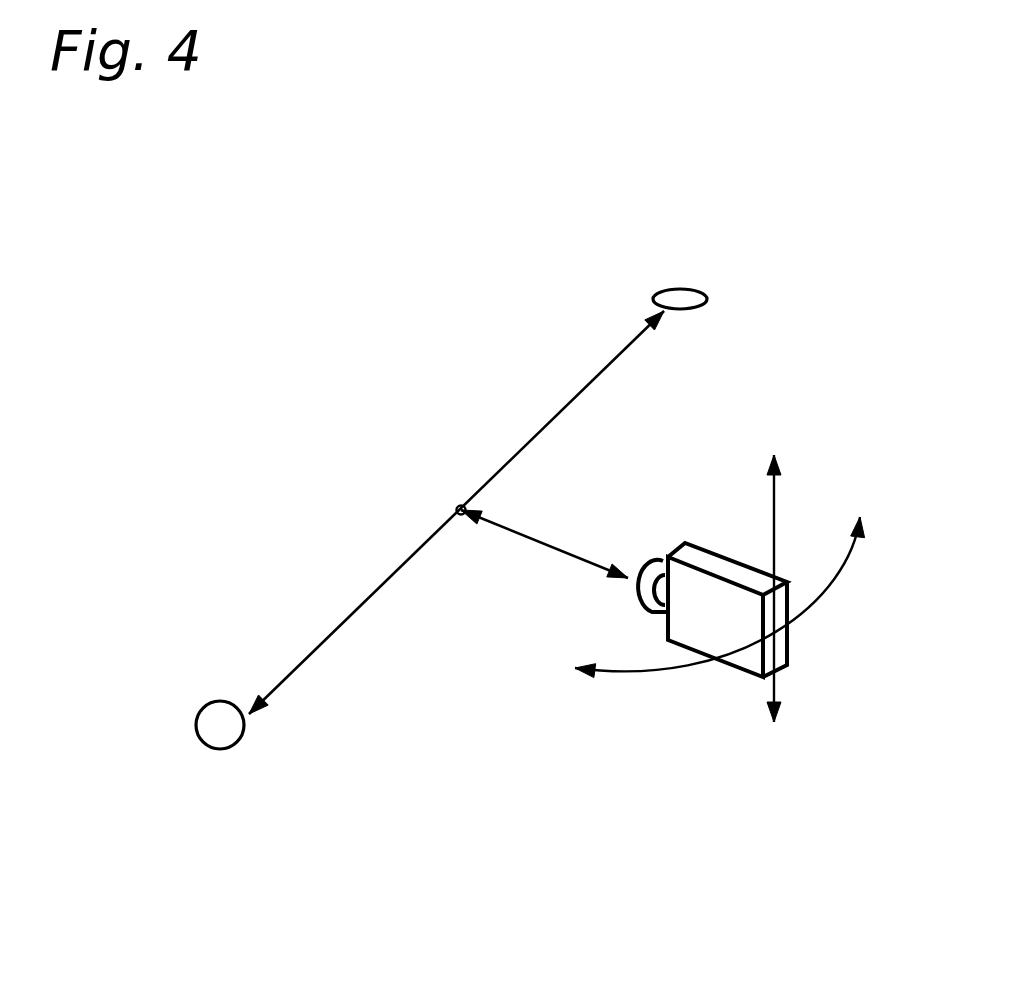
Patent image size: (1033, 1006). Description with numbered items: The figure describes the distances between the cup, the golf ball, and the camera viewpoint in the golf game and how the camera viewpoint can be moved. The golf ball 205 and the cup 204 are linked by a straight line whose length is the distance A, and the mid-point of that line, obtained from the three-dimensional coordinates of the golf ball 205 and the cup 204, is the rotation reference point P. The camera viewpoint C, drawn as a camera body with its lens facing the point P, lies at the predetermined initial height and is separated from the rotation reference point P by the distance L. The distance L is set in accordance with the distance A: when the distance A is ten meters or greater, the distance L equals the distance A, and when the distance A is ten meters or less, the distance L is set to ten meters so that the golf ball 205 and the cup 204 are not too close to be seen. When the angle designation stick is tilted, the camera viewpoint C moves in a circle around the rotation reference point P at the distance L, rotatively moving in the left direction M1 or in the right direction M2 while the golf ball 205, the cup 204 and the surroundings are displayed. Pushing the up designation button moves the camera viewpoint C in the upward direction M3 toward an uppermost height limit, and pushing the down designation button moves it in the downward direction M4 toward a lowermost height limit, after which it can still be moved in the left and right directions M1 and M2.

The cup 204 is at (684, 291).
The golf ball 205 is at (220, 749).
The camera viewpoint C is at (700, 555).
The rotation reference point P is at (458, 507).
The distance A is at (456, 512).
The distance L is at (544, 551).
The left direction M1 is at (691, 601).
The right direction M2 is at (872, 506).
The upward direction M3 is at (777, 507).
The downward direction M4 is at (777, 686).